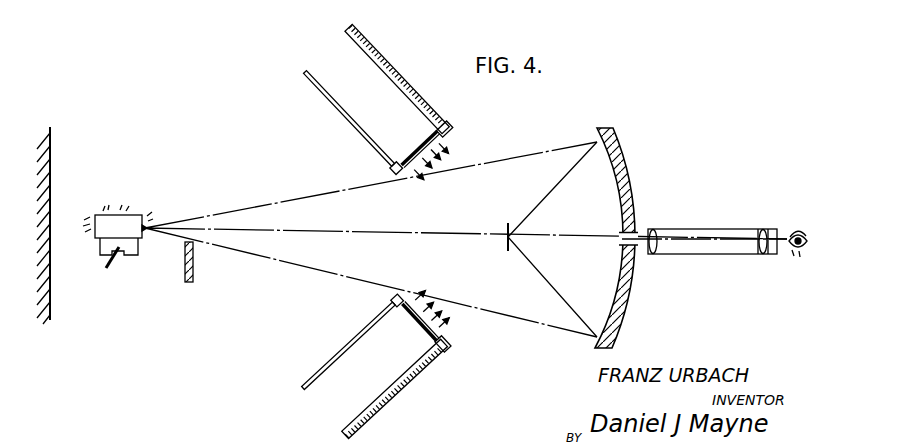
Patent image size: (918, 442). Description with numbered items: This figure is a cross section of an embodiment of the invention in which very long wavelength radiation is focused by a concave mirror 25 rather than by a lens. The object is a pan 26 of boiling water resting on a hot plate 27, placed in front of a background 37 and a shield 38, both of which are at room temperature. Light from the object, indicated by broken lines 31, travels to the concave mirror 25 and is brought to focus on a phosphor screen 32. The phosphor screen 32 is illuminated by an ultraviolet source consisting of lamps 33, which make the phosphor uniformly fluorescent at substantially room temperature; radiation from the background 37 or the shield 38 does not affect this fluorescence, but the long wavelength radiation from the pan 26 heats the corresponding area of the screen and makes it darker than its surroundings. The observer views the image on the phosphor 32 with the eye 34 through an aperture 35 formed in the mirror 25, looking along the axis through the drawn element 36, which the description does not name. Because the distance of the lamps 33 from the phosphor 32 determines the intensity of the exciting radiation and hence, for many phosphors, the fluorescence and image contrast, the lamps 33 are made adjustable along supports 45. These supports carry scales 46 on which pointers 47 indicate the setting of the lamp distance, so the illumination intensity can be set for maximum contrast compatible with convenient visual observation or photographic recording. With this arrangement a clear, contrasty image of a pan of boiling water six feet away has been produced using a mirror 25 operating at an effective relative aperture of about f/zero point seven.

The concave mirror 25 is at (616, 190).
The pan of boiling water 26 is at (116, 214).
The hot plate 27 is at (138, 254).
The broken lines (light rays) 31 is at (297, 265).
The phosphor screen 32 is at (506, 223).
The ultraviolet lamps 33 is at (417, 138).
The eye of observer 34 is at (796, 231).
The aperture in the mirror 35 is at (637, 245).
The viewing telescope 36 is at (702, 229).
The background 37 is at (53, 139).
The shield 38 is at (194, 263).
The supports 45 is at (334, 98).
The scales 46 is at (376, 64).
The pointers 47 is at (447, 124).